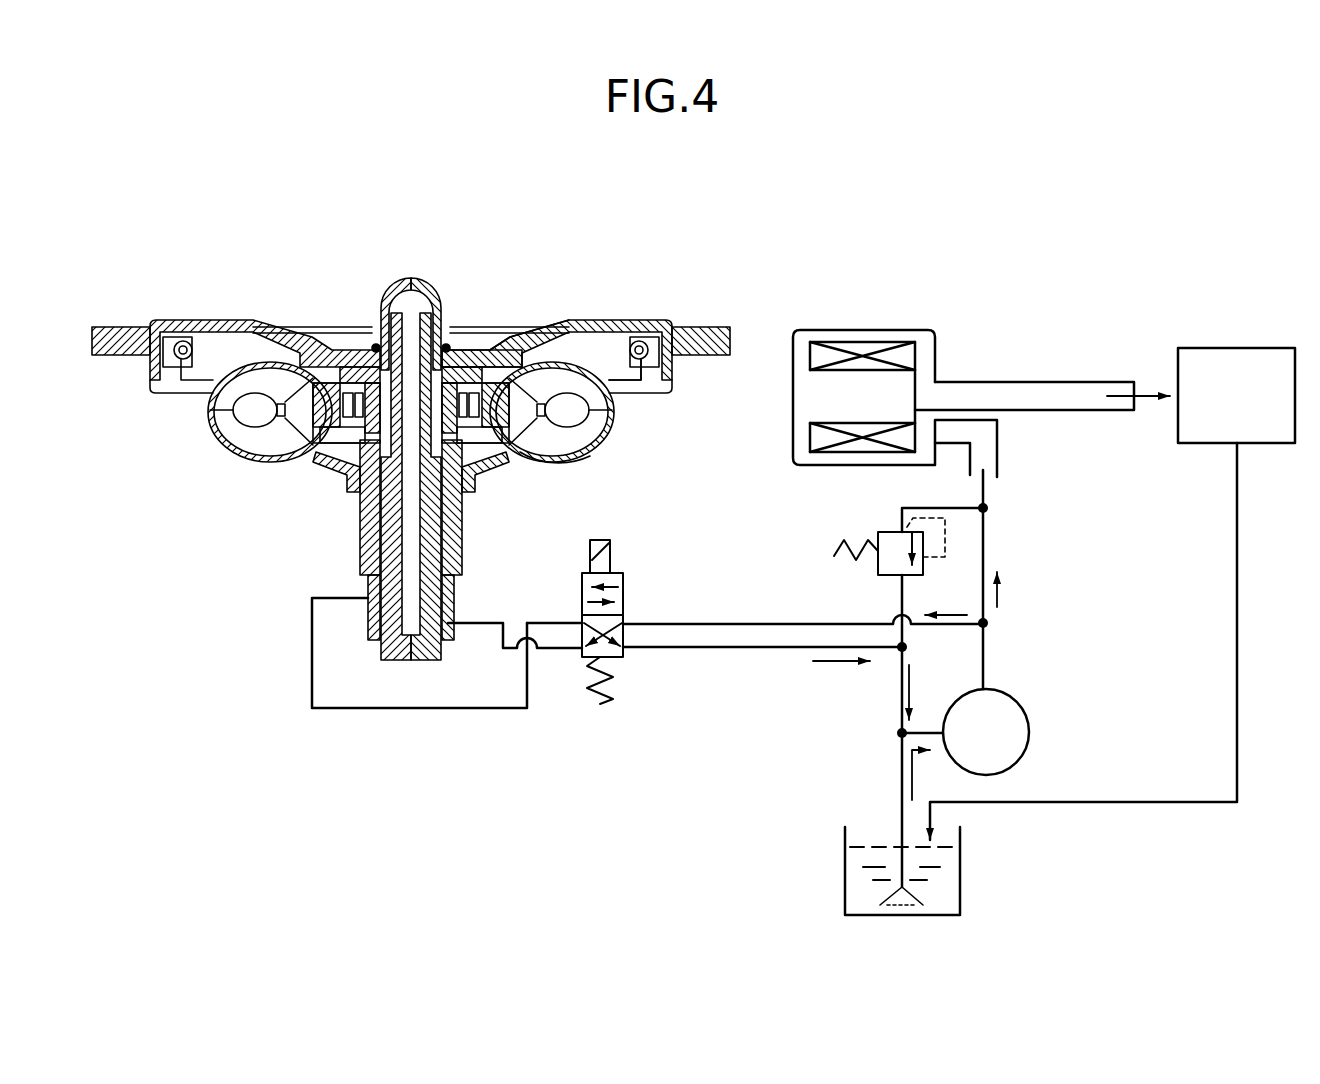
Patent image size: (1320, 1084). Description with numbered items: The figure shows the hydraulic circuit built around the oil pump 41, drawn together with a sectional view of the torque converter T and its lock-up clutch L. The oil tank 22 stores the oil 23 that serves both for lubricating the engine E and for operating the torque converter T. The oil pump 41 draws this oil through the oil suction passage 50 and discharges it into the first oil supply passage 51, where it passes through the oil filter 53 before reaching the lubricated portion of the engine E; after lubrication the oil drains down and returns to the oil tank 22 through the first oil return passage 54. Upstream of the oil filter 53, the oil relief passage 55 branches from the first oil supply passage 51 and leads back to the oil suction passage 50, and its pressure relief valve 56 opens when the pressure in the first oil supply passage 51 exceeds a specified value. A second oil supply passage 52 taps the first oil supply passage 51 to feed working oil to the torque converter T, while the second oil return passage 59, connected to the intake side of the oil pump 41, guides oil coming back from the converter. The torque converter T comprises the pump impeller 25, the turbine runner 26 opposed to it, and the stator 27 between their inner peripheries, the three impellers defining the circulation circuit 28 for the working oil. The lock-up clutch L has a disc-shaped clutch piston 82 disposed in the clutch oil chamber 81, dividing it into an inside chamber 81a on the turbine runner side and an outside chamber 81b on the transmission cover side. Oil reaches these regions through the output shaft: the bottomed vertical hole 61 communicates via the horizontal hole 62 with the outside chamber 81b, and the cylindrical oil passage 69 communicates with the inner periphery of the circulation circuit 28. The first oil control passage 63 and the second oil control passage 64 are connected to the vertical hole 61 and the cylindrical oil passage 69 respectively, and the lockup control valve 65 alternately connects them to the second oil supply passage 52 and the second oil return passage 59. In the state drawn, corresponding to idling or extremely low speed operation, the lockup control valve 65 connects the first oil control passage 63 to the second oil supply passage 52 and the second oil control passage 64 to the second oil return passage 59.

The oil tank 22 is at (843, 877).
The oil 23 is at (863, 847).
The pump impeller 25 is at (600, 447).
The turbine runner 26 is at (667, 400).
The stator 27 is at (527, 410).
The circulation circuit 28 is at (555, 455).
The oil pump 41 is at (998, 718).
The oil suction passage 50 is at (898, 790).
The first oil supply passage 51 is at (1050, 403).
The second oil supply passage 52 is at (787, 623).
The oil filter 53 is at (863, 347).
The first oil return passage 54 is at (1237, 607).
The oil relief passage 55 is at (902, 508).
The pressure relief valve 56 is at (890, 573).
The second oil return passage 59 is at (765, 648).
The vertical hole 61 is at (408, 477).
The horizontal hole 62 is at (397, 355).
The first oil control passage 63 is at (493, 622).
The second oil control passage 64 is at (432, 708).
The lockup control valve 65 is at (632, 595).
The cylindrical oil passage 69 is at (380, 587).
The clutch oil chamber 81 is at (557, 243).
The inside chamber 81a is at (553, 357).
The outside chamber 81b is at (483, 353).
The clutch piston 82 is at (237, 346).
The engine E is at (1228, 415).
The torque converter T is at (555, 320).
The lock-up clutch L is at (598, 338).